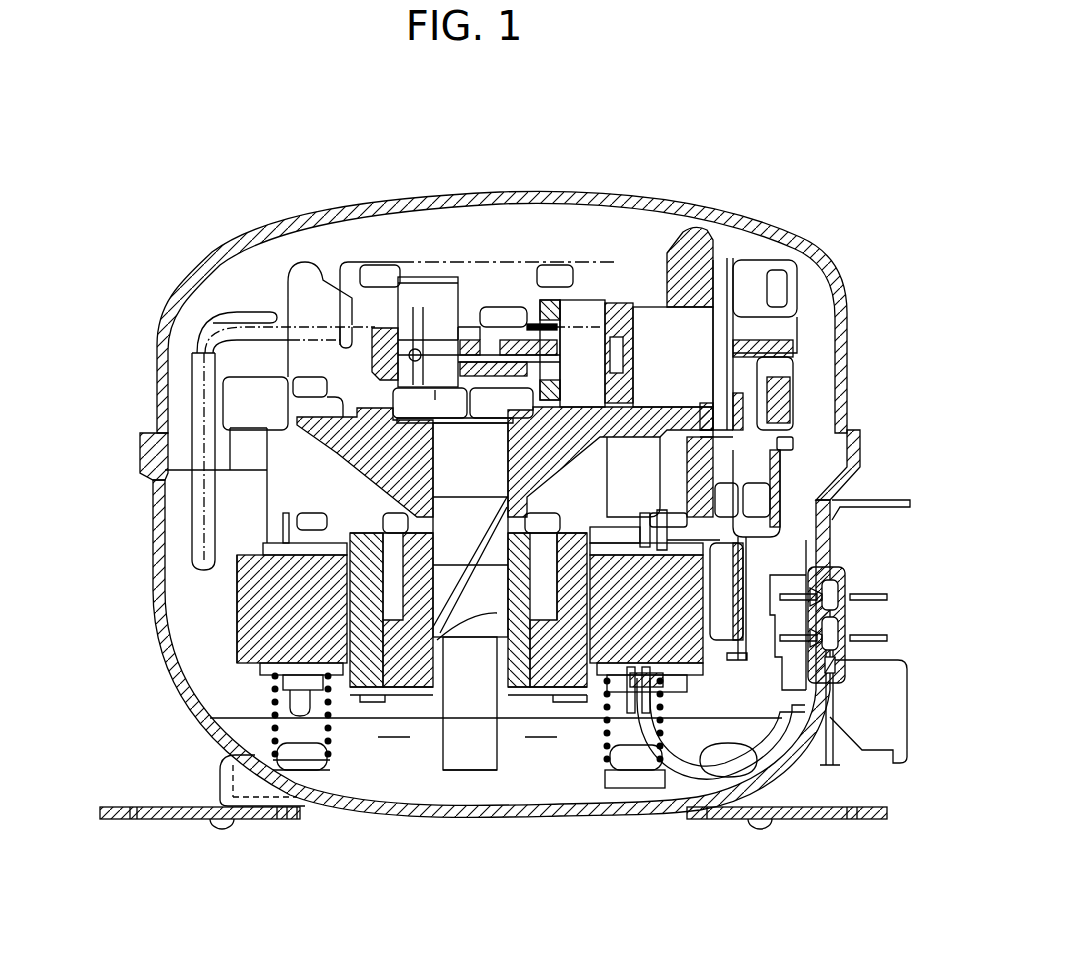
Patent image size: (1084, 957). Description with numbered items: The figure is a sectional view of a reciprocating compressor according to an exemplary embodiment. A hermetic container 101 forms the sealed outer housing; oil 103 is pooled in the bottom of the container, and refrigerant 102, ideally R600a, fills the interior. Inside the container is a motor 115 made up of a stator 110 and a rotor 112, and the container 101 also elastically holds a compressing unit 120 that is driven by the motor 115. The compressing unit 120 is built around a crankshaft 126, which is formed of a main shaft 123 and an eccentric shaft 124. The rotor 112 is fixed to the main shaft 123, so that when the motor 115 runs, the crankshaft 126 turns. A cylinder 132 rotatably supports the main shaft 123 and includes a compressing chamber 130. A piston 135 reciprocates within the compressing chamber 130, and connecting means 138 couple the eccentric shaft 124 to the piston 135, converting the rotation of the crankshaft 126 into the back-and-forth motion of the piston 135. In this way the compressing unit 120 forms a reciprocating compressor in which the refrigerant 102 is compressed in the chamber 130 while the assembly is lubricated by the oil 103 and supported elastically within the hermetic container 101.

The hermetic container 101 is at (505, 504).
The refrigerant 102 is at (262, 277).
The oil 103 is at (593, 793).
The stator 110 is at (237, 640).
The rotor 112 is at (372, 650).
The motor 115 is at (235, 603).
The compressing unit 120 is at (700, 247).
The main shaft 123 is at (470, 610).
The eccentric shaft 124 is at (445, 305).
The crankshaft 126 is at (492, 766).
The compressing chamber 130 is at (684, 347).
The cylinder 132 is at (607, 423).
The piston 135 is at (620, 307).
The connecting means 138 is at (509, 340).